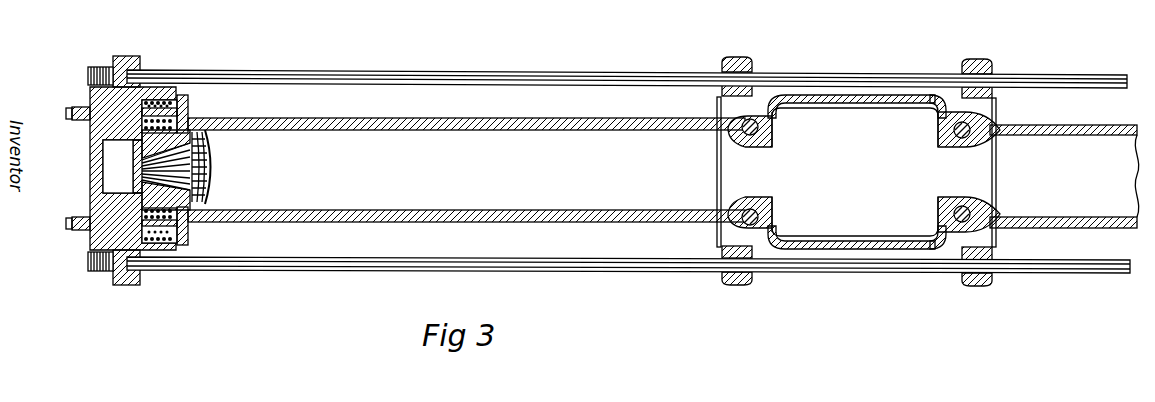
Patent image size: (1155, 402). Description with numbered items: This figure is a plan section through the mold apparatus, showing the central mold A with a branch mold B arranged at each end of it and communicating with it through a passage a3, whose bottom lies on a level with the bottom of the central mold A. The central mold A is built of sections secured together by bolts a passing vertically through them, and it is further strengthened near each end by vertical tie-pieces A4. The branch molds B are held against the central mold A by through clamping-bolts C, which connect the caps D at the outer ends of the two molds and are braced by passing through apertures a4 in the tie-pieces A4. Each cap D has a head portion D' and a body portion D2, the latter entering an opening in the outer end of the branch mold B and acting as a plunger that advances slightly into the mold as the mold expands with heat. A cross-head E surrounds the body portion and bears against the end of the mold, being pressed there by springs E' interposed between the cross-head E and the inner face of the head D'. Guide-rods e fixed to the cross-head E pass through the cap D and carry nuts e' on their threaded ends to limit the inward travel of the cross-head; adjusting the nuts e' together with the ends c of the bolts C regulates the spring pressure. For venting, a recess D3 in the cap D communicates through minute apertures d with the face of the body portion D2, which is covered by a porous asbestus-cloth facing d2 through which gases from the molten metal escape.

The cap D is at (115, 168).
The head portion D' is at (133, 150).
The body portion D2 is at (200, 128).
The recess D3 is at (118, 166).
The bolt ends c is at (100, 67).
The guide-rods e is at (61, 170).
The nuts e' is at (60, 158).
The cross-head E is at (206, 145).
The springs E' is at (172, 183).
The minute apertures d is at (208, 168).
The asbestus-cloth facing d2 is at (209, 193).
The branch molds B is at (238, 212).
The central mold A is at (864, 172).
The bolts a is at (733, 120).
The passage a3 is at (857, 172).
The apertures a4 is at (753, 74).
The vertical tie-pieces A4 is at (742, 57).
The clamping-bolts C is at (628, 178).